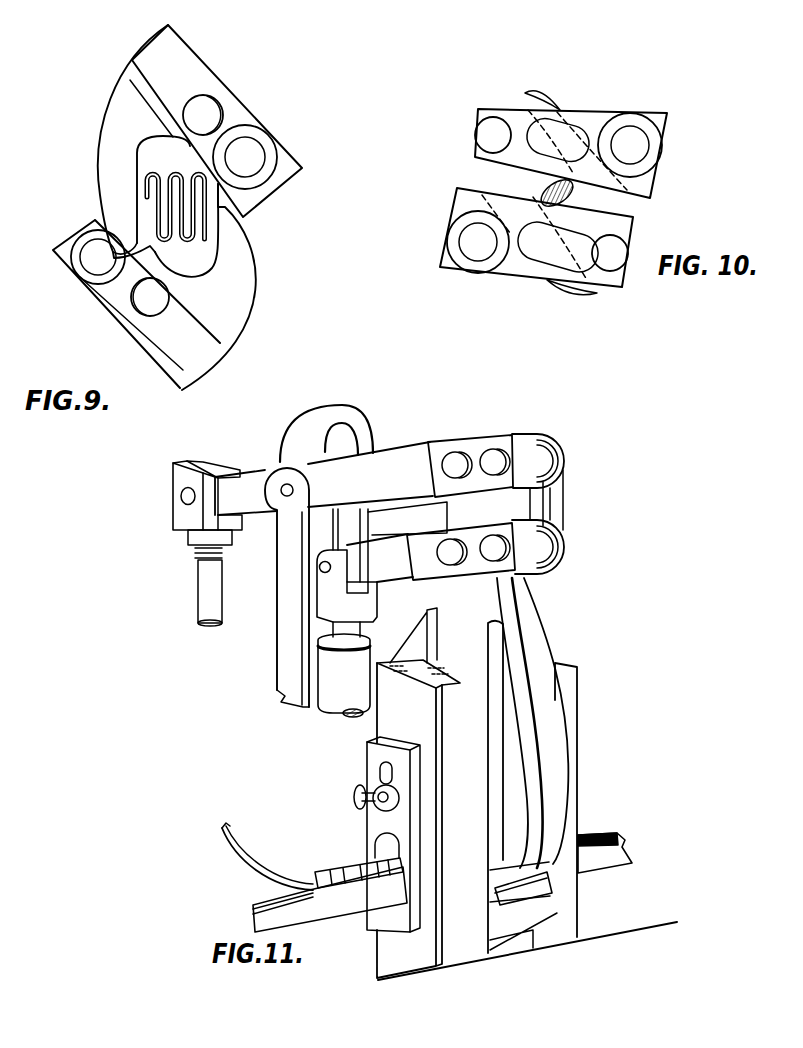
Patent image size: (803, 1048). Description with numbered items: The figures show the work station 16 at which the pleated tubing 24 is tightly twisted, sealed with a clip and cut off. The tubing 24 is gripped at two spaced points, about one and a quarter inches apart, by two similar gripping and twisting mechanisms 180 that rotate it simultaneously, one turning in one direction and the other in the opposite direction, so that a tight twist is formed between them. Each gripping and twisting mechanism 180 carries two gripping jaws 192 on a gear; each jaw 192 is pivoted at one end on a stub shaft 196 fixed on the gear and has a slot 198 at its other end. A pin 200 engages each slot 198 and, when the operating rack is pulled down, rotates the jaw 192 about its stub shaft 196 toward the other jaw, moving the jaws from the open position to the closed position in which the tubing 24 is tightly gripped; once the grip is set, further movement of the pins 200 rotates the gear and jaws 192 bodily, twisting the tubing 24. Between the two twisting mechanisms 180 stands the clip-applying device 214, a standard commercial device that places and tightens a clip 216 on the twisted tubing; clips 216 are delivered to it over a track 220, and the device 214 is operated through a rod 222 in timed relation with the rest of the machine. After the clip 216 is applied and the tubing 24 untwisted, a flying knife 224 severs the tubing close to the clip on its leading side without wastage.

In FIG. 11, the work station 16 is at (384, 431).
In FIG. 9, the tubing 24 is at (208, 225).
In FIG. 10, the tubing 24 is at (575, 200).
In FIG. 11, the tubing 24 is at (615, 848).
In FIG. 11, the gripping and twisting mechanism 180 is at (566, 684).
In FIG. 9, the gripping jaw 192 is at (193, 67).
In FIG. 10, the gripping jaw 192 is at (582, 113).
In FIG. 9, the stub shaft 196 is at (252, 153).
In FIG. 10, the stub shaft 196 is at (630, 133).
In FIG. 9, the slot 198 is at (168, 47).
In FIG. 10, the slot 198 is at (478, 145).
In FIG. 9, the pin 200 is at (208, 115).
In FIG. 10, the pin 200 is at (500, 127).
In FIG. 11, the clip-applying device 214 is at (532, 647).
In FIG. 11, the clip 216 is at (355, 893).
In FIG. 11, the track 220 is at (243, 842).
In FIG. 11, the rod 222 is at (200, 593).
In FIG. 11, the flying knife 224 is at (547, 900).